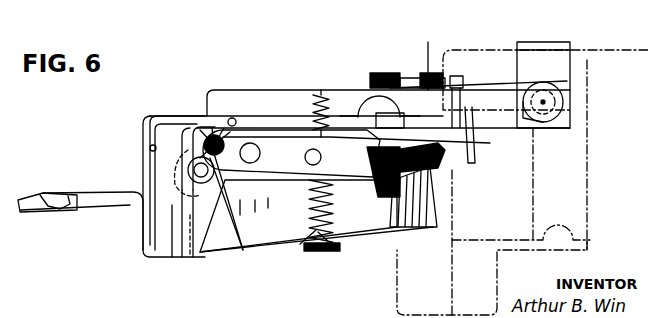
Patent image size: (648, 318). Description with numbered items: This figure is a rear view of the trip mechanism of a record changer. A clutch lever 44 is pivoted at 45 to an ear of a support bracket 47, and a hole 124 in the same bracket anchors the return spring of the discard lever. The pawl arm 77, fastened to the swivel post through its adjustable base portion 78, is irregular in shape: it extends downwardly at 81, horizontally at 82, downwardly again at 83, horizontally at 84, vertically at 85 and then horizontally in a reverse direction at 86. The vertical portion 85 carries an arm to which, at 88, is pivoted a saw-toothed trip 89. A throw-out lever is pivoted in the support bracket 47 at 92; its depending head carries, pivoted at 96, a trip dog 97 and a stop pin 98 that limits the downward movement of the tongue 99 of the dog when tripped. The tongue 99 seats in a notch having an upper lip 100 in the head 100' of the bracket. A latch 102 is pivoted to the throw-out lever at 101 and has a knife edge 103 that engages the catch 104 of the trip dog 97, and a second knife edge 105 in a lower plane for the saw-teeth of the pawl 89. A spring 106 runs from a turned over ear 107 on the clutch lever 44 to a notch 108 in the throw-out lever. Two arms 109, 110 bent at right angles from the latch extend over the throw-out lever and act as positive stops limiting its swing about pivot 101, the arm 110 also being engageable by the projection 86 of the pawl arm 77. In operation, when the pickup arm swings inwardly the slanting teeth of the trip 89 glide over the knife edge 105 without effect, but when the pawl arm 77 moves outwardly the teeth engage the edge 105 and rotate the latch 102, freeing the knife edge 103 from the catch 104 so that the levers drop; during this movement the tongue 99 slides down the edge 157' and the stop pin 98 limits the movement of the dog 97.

The clutch lever 44 is at (173, 258).
The pivot 45 is at (194, 170).
The support bracket 47 is at (167, 125).
The pawl arm 77 is at (600, 134).
The base portion 78 is at (497, 50).
The downward portion 81 is at (592, 192).
The horizontal portion 82 is at (527, 240).
The downward portion 83 is at (494, 276).
The horizontal portion 84 is at (472, 303).
The vertical portion 85 is at (398, 250).
The reverse horizontal projection 86 is at (463, 82).
The pivot 88 is at (288, 181).
The saw-toothed trip 89 is at (474, 154).
The pivot 92 is at (555, 104).
The pivot 96 is at (252, 140).
The trip dog 97 is at (272, 138).
The stop pin 98 is at (231, 118).
The tongue 99 is at (210, 138).
The upper lip 100 is at (206, 115).
The head 100' is at (199, 249).
The pivot 101 is at (372, 112).
The latch 102 is at (442, 168).
The knife edge 103 is at (380, 184).
The catch 104 is at (350, 148).
The knife edge 105 is at (393, 198).
The spring 106 is at (304, 250).
The turned over ear 107 is at (312, 258).
The notch 108 is at (320, 92).
The arm 109 is at (427, 58).
The arm 110 is at (398, 74).
The hole 124 is at (150, 147).
The edge 157' is at (235, 214).